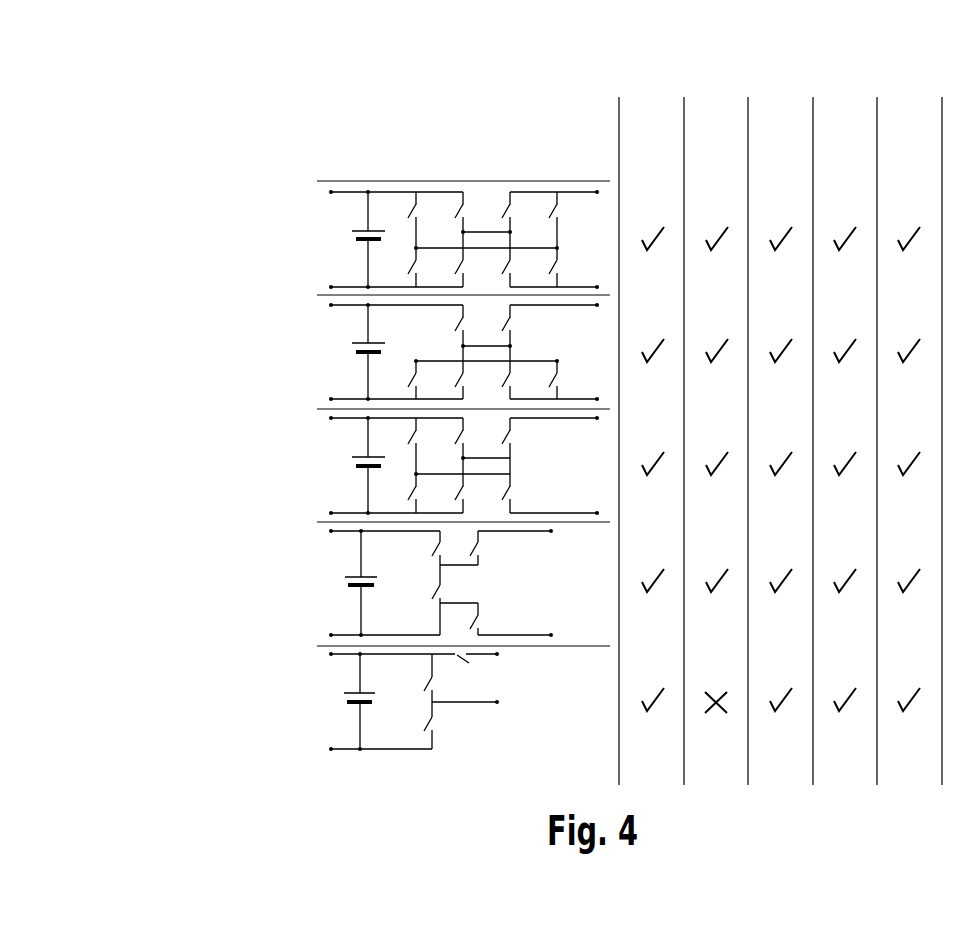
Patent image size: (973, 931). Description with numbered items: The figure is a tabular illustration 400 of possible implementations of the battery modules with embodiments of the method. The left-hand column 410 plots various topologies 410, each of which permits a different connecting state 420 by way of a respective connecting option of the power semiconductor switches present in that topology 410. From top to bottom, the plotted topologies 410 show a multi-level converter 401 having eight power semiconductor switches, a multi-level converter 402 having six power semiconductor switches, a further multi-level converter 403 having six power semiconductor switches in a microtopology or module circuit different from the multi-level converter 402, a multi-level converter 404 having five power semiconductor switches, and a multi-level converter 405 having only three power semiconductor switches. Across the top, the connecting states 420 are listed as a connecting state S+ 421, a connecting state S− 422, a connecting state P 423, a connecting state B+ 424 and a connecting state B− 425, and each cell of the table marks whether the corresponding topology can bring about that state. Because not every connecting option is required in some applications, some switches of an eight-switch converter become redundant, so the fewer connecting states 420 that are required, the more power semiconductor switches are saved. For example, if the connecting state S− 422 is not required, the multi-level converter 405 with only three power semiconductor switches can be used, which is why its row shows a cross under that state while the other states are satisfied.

The tabular illustration 400 is at (157, 130).
The multi-level converter having eight power semiconductor switches 401 is at (317, 216).
The multi-level converter having six power semiconductor switches 402 is at (318, 333).
The further multi-level converter having six power semiconductor switches 403 is at (318, 455).
The multi-level converter having five power semiconductor switches 404 is at (318, 577).
The multi-level converter having three power semiconductor switches 405 is at (318, 689).
The topologies 410 is at (492, 155).
The connecting states 420 is at (942, 80).
The connecting state S+ 421 is at (675, 155).
The connecting state S− 422 is at (739, 155).
The connecting state P 423 is at (803, 155).
The connecting state B+ 424 is at (867, 155).
The connecting state B− 425 is at (931, 155).